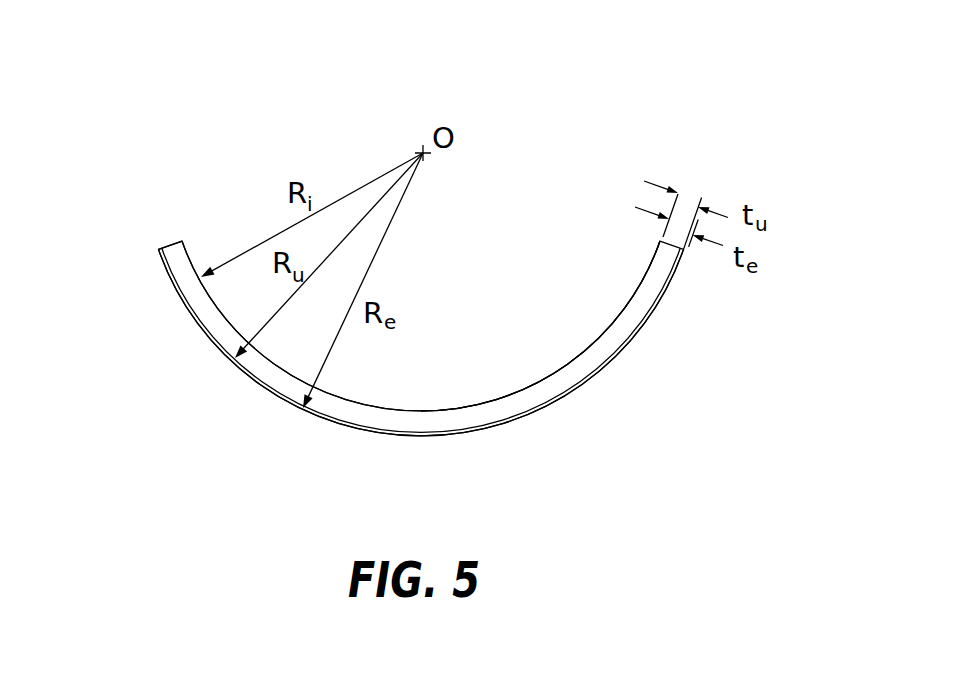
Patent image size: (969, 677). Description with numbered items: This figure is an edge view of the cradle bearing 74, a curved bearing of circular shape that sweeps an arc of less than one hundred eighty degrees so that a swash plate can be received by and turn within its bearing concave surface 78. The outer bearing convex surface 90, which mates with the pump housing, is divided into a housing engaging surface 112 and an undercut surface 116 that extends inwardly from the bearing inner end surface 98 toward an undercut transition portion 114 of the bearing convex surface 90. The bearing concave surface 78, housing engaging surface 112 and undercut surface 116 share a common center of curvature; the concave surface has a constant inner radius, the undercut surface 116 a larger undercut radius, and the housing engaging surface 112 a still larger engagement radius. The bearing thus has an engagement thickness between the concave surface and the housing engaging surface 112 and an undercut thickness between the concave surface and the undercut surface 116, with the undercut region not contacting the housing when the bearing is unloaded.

The cradle bearing 74 is at (167, 174).
The bearing concave surface 78 is at (454, 407).
The bearing inner end surface 98 is at (538, 386).
The undercut transition portion 114 is at (159, 249).
The undercut surface 116 is at (337, 423).
The bearing convex surface 90 is at (553, 406).
The housing engaging surface 112 is at (659, 348).